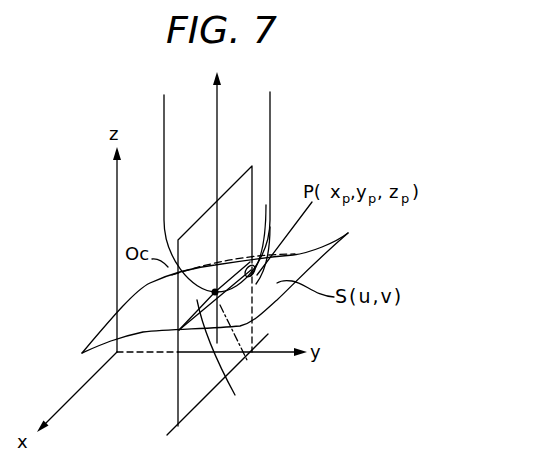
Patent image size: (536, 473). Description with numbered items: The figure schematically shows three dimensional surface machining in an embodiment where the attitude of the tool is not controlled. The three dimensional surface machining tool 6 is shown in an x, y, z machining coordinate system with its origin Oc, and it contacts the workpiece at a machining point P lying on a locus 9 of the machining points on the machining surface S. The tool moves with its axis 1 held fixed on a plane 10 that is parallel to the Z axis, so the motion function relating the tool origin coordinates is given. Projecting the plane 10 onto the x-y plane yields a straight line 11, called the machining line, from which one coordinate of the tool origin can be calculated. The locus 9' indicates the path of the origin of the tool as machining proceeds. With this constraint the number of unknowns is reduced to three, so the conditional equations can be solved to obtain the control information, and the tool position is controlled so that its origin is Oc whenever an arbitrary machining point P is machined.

The axis of the tool 1 is at (217, 115).
The three dimensional surface machining tool 6 is at (251, 136).
The locus of the machining points 9 is at (244, 347).
The locus of the origin of the tool 9' is at (226, 357).
The plane 10 is at (243, 203).
The straight line 11 is at (197, 406).